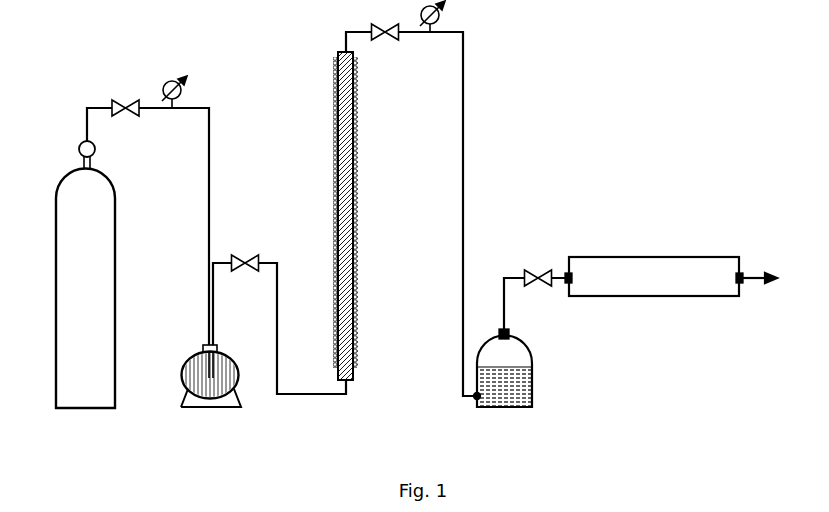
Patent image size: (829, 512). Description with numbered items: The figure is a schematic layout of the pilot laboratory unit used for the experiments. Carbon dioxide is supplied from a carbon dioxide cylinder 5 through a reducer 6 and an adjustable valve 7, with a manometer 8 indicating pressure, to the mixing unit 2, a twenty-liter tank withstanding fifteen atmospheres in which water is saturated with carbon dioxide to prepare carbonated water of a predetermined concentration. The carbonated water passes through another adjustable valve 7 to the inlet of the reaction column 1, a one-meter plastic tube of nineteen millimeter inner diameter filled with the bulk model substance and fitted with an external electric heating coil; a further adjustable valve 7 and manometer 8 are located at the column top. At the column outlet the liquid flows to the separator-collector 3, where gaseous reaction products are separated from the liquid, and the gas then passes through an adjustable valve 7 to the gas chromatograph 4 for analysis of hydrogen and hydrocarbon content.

The reaction column with heating unit 1 is at (358, 216).
The mixing unit 2 is at (211, 370).
The separator-collector 3 is at (504, 365).
The gas chromatograph 4 is at (654, 276).
The carbon dioxide cylinder 5 is at (85, 282).
The reducer 6 is at (96, 148).
The adjustable valve 7 is at (332, 145).
The manometer 8 is at (312, 54).